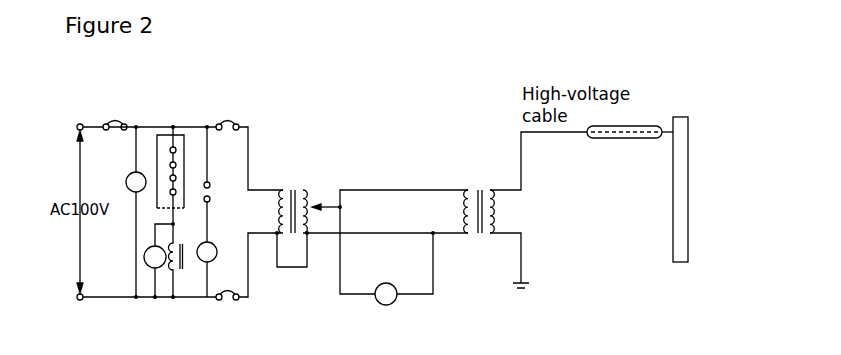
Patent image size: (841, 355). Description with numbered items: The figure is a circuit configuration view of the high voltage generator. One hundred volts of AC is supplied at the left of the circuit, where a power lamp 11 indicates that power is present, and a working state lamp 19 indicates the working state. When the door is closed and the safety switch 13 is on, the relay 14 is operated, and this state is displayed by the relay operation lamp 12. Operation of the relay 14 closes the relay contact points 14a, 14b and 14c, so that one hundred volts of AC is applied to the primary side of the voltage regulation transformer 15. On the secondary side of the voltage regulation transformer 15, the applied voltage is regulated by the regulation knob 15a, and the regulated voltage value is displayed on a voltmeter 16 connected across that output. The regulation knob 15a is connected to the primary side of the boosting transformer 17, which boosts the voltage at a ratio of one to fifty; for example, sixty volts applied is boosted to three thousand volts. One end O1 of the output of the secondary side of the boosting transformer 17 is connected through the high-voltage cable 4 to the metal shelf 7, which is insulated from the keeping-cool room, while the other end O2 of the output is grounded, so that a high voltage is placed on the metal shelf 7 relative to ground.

The power lamp 11 is at (125, 181).
The relay operation lamp 12 is at (144, 256).
The safety switch 13 is at (185, 142).
The relay 14 is at (181, 271).
The relay contact point 14a is at (234, 121).
The relay contact point 14b is at (211, 199).
The relay contact point 14c is at (234, 301).
The voltage regulation transformer 15 is at (294, 188).
The regulation knob 15a is at (337, 203).
The voltmeter 16 is at (388, 283).
The boosting transformer 17 is at (474, 166).
The working state lamp 19 is at (218, 243).
The high-voltage cable 4 is at (625, 140).
The metal shelf 7 is at (689, 185).
The one end of the output O1 is at (666, 128).
The other end of the output O2 is at (521, 282).